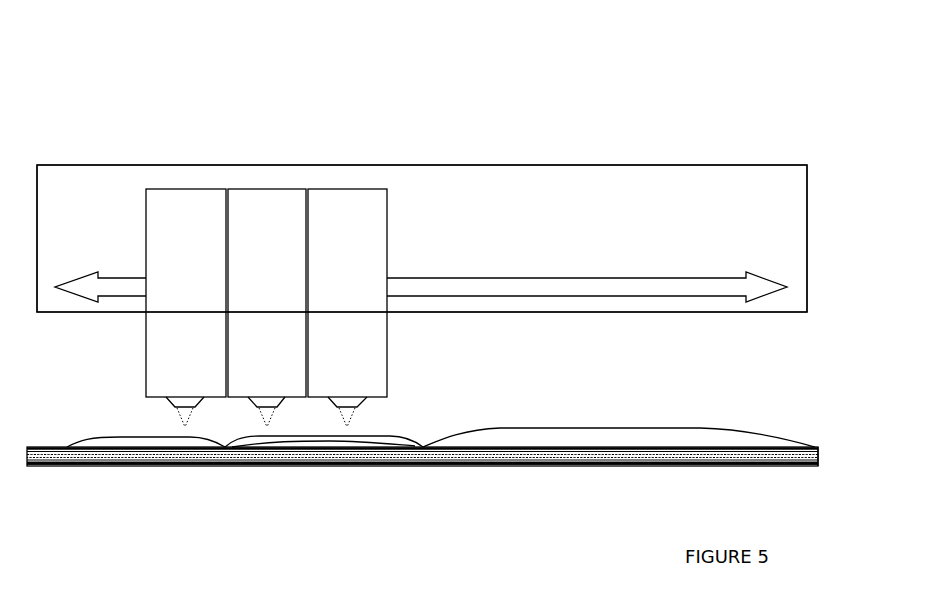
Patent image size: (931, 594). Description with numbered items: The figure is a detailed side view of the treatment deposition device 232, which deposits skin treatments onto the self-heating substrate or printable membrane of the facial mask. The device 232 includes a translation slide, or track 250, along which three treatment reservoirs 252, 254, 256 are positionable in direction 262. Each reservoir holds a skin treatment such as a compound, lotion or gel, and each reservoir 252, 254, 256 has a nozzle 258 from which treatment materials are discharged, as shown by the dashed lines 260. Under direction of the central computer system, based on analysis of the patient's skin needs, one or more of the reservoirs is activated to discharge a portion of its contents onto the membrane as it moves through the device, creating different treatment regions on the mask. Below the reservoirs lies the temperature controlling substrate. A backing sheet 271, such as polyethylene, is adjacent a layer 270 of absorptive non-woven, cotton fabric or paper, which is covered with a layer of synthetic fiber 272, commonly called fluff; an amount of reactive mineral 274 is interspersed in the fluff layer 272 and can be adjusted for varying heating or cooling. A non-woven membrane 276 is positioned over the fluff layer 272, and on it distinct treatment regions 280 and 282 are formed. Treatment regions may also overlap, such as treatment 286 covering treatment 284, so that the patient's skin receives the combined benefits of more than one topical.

The treatment deposition device 232 is at (150, 92).
The translation slide or track 250 is at (668, 190).
The treatment reservoir 252 is at (186, 207).
The treatment reservoir 254 is at (265, 207).
The treatment reservoir 256 is at (353, 207).
The nozzle 258 is at (358, 405).
The dashed lines 260 is at (180, 420).
The direction 262 is at (649, 288).
The layer of absorptive non-woven 270 is at (213, 463).
The backing sheet 271 is at (125, 467).
The layer of synthetic fiber 272 is at (450, 453).
The reactive mineral 274 is at (598, 455).
The non-woven layer 276 is at (817, 447).
The treatment region 280 is at (107, 438).
The treatment region 282 is at (570, 438).
The treatment 284 is at (403, 438).
The treatment 286 is at (317, 444).